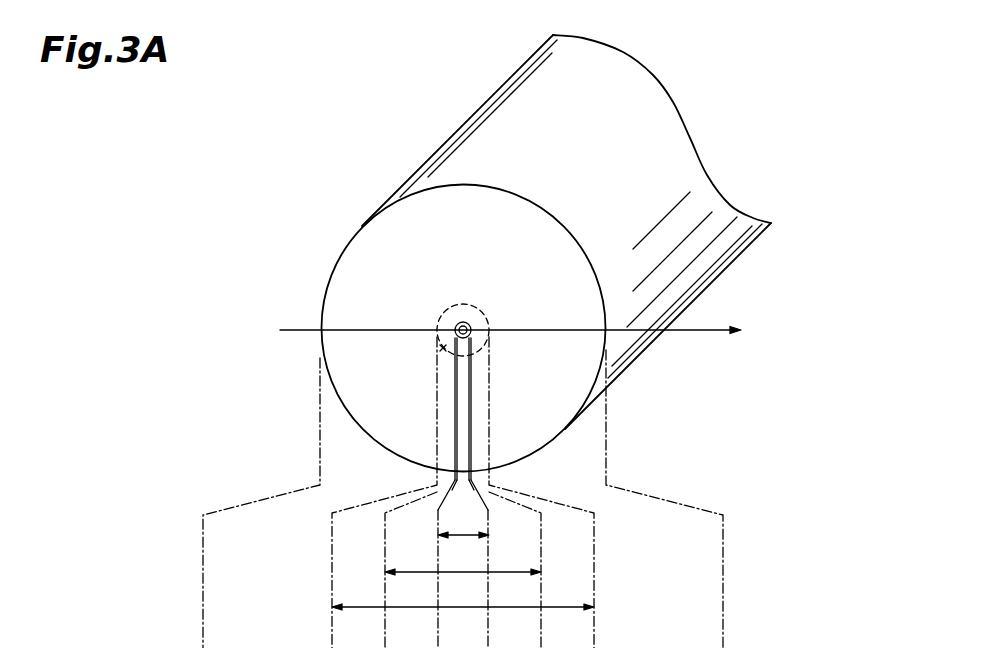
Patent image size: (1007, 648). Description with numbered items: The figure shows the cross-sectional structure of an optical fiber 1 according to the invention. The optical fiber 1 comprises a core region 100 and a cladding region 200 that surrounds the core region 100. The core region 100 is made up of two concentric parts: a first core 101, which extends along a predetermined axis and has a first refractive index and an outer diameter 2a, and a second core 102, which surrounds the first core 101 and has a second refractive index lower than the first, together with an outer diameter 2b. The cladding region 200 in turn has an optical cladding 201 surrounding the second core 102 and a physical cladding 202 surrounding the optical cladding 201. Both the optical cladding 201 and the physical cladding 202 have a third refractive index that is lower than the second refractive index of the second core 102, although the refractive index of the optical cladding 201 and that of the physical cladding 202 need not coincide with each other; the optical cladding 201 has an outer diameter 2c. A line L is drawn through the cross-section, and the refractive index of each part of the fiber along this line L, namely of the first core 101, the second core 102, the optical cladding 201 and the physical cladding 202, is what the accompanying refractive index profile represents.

The optical fiber 1 is at (651, 117).
The line L is at (519, 332).
The core region 100 is at (256, 260).
The first core 101 is at (456, 327).
The second core 102 is at (453, 312).
The cladding region 200 is at (256, 355).
The optical cladding 201 is at (443, 349).
The physical cladding 202 is at (350, 407).
The outer diameter of the first core 2a is at (463, 527).
The outer diameter of the second core 2b is at (463, 562).
The outer diameter of the optical cladding 2c is at (463, 598).